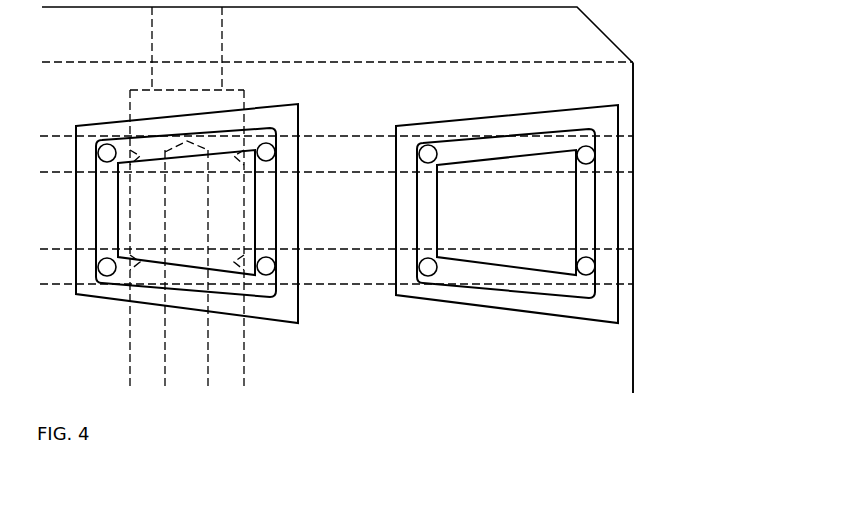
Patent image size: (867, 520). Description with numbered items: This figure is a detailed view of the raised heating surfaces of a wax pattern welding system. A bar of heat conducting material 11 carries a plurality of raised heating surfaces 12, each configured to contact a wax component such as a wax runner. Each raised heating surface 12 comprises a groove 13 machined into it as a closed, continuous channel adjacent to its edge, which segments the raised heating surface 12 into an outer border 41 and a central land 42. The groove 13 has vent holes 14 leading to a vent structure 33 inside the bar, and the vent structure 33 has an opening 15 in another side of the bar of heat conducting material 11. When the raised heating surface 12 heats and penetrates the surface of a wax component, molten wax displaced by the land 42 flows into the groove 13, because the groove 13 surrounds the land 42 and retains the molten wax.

The bar of heat conducting material 11 is at (625, 50).
The raised heating surface 12 is at (618, 123).
The groove 13 is at (583, 202).
The vent holes 14 is at (585, 268).
The opening 15 is at (633, 270).
The vent structure 33 is at (368, 267).
The border 41 is at (476, 293).
The land 42 is at (504, 216).